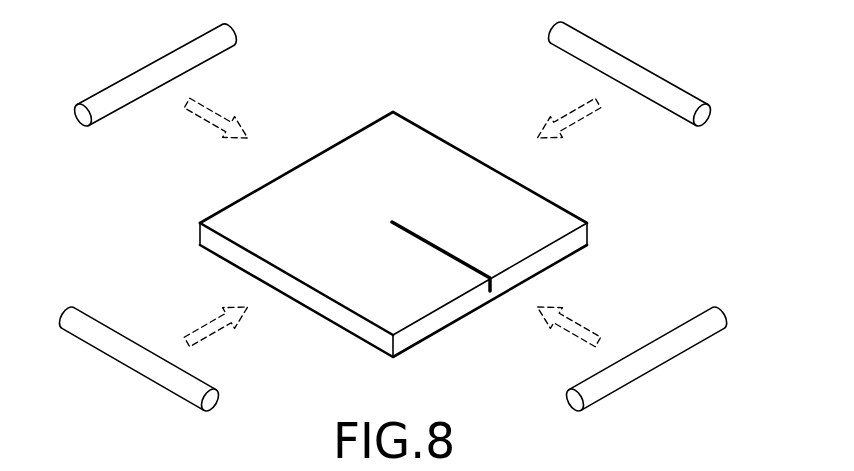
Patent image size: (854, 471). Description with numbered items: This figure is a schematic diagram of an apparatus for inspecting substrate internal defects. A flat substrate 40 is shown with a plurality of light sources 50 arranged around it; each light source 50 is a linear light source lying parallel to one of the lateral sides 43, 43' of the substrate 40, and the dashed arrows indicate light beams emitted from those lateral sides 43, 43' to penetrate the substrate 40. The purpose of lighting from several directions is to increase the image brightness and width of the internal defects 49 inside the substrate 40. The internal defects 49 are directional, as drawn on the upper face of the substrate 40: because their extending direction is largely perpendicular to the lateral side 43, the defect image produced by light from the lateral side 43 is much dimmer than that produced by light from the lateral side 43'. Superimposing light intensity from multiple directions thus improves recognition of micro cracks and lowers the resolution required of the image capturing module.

The substrate 40 is at (272, 198).
The lateral side 43 is at (531, 279).
The lateral side 43' is at (439, 252).
The internal defects 49 is at (443, 250).
The light sources 50 is at (160, 64).